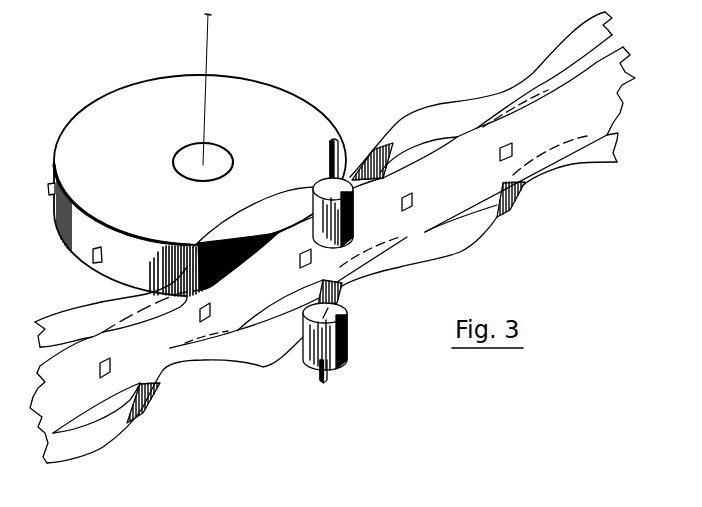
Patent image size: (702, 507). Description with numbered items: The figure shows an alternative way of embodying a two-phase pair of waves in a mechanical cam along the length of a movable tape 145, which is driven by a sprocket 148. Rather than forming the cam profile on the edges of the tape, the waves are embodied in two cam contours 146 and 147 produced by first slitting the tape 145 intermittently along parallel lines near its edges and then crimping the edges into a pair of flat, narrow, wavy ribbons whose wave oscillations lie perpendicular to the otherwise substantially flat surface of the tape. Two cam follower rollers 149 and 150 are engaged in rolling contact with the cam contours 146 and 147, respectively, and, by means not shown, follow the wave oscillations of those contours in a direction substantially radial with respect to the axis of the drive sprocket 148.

The tape 145 is at (635, 79).
The cam contour 146 is at (497, 96).
The cam contour 147 is at (508, 212).
The sprocket 148 is at (267, 88).
The cam follower roller 149 is at (320, 182).
The cam follower roller 150 is at (345, 316).